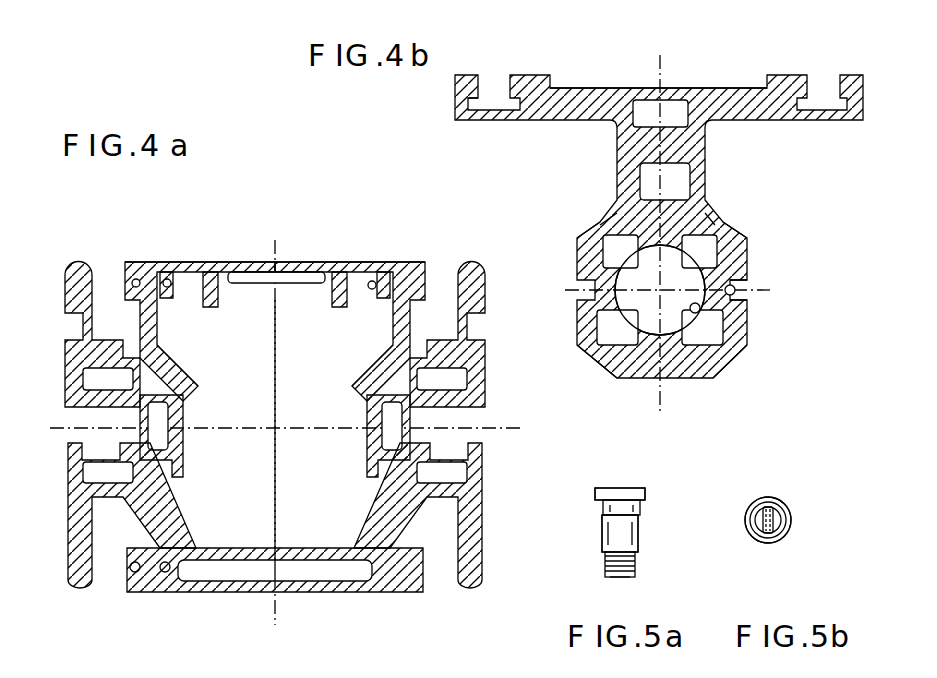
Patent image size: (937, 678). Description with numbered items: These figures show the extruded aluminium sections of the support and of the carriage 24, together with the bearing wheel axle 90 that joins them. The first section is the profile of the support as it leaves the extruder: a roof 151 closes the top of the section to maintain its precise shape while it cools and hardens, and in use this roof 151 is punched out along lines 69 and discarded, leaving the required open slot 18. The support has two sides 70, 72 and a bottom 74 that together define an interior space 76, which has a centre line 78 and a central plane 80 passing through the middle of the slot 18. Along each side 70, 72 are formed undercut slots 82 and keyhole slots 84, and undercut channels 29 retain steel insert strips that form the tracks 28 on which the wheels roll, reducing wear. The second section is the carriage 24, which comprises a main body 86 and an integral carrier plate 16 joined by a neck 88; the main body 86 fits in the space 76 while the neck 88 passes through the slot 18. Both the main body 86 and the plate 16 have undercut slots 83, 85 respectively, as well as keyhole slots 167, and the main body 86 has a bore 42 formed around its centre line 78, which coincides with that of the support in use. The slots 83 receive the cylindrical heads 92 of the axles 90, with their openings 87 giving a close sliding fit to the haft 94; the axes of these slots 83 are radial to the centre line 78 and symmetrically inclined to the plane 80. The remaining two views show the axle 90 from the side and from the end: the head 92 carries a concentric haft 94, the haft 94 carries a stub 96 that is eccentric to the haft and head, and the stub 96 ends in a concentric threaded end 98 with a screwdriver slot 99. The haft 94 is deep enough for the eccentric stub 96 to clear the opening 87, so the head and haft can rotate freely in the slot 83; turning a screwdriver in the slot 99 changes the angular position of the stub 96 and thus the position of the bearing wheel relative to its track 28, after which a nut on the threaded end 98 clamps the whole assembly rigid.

In FIG. 4B, the carrier plate 16 is at (770, 112).
In FIG. 4A, the open slot 18 is at (272, 280).
In FIG. 4B, the carriage 24 is at (737, 70).
In FIG. 4A, the tracks 28 is at (182, 482).
In FIG. 4A, the undercut channels 29 is at (275, 346).
In FIG. 4B, the bore 42 is at (720, 345).
In FIG. 4A, the lines 69 is at (322, 262).
In FIG. 4A, the side 70 is at (68, 478).
In FIG. 4A, the side 72 is at (482, 474).
In FIG. 4A, the bottom 74 is at (215, 593).
In FIG. 4A, the interior space 76 is at (305, 497).
In FIG. 4B, the centre line 78 is at (698, 312).
In FIG. 4A, the central plane 80 is at (275, 362).
In FIG. 4B, the central plane 80 is at (665, 62).
In FIG. 4A, the undercut slots 82 is at (93, 313).
In FIG. 4B, the undercut slots 83 is at (725, 238).
In FIG. 4A, the keyhole slots 84 is at (140, 280).
In FIG. 4B, the undercut slots 85 is at (478, 98).
In FIG. 4B, the main body 86 is at (745, 325).
In FIG. 4B, the openings 87 is at (600, 225).
In FIG. 4B, the neck 88 is at (705, 157).
In FIG. 5A, the axle 90 is at (652, 498).
In FIG. 5B, the axle 90 is at (748, 496).
In FIG. 5A, the cylindrical head 92 is at (596, 490).
In FIG. 5B, the cylindrical head 92 is at (786, 512).
In FIG. 5A, the haft 94 is at (603, 508).
In FIG. 5B, the haft 94 is at (782, 522).
In FIG. 5A, the stub 96 is at (602, 535).
In FIG. 5B, the stub 96 is at (752, 538).
In FIG. 5A, the threaded end 98 is at (636, 566).
In FIG. 5A, the screwdriver slot 99 is at (620, 578).
In FIG. 5B, the screwdriver slot 99 is at (774, 508).
In FIG. 4A, the roof 151 is at (290, 262).
In FIG. 4B, the keyhole slots 167 is at (738, 290).